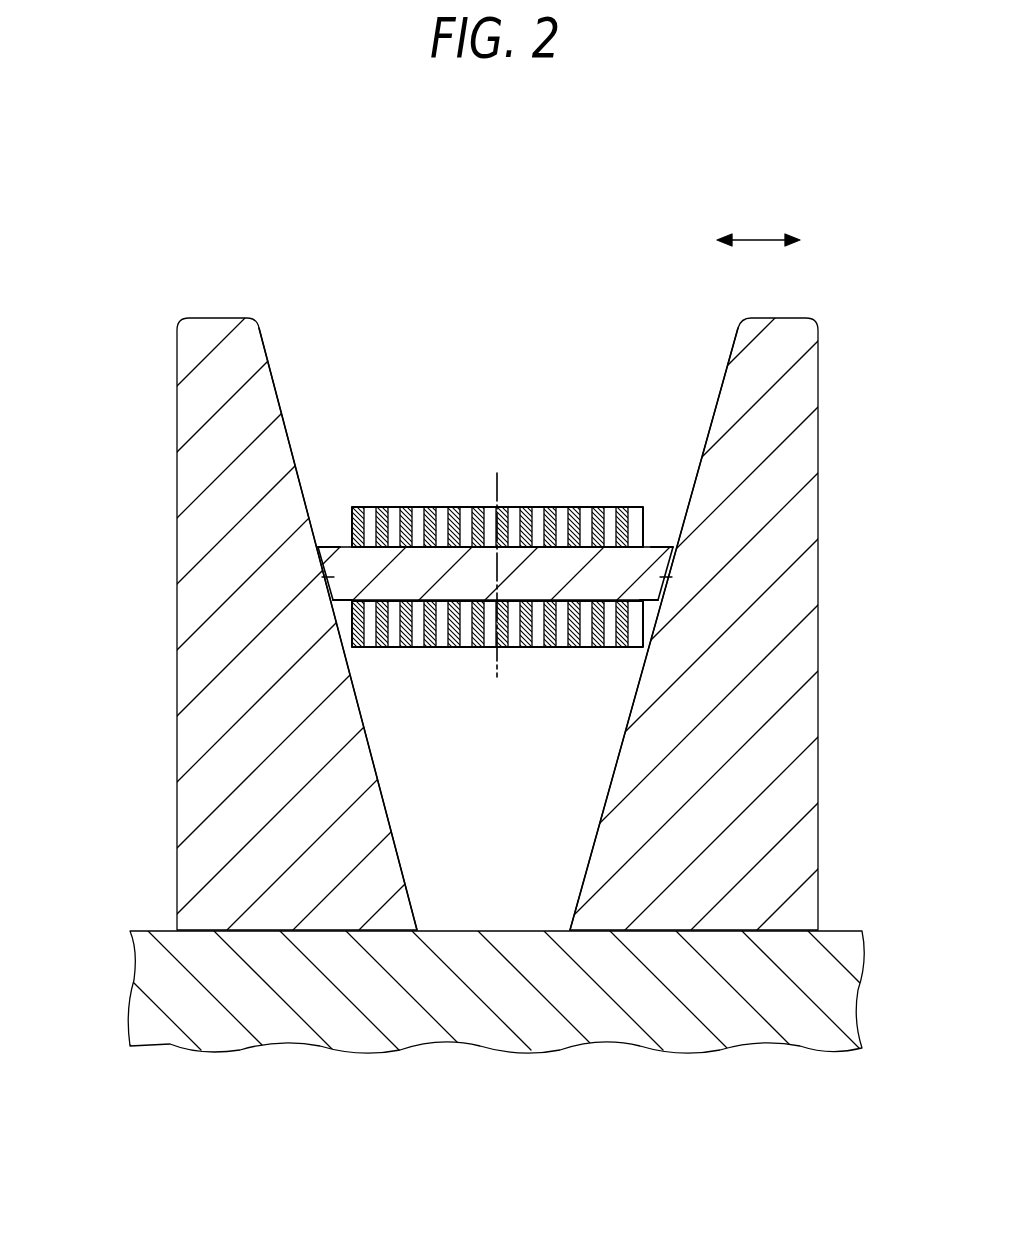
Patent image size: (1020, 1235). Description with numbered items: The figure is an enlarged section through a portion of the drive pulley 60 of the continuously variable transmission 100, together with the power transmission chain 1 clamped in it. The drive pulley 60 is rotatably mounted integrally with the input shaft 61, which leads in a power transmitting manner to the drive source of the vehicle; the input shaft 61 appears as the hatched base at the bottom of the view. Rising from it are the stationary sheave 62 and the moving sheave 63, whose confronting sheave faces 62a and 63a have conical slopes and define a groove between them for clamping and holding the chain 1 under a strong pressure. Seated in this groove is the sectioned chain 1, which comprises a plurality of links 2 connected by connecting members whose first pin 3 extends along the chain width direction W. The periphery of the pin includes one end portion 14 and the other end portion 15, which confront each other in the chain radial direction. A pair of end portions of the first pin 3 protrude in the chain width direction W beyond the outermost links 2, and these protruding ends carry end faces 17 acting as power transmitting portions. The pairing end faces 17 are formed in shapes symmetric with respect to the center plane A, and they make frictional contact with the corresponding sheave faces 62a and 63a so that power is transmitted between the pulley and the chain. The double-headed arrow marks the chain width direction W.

The continuously variable transmission 100 is at (485, 304).
The drive pulley 60 is at (128, 393).
The input shaft 61 is at (672, 1022).
The stationary sheave 62 is at (186, 366).
The sheave face 62a is at (276, 397).
The moving sheave 63 is at (808, 367).
The sheave face 63a is at (719, 396).
The power transmission chain 1 is at (534, 472).
The link 2 is at (365, 505).
The first pin 3 is at (643, 567).
The one end portion 14 is at (337, 547).
The other end portion 15 is at (340, 606).
The end face 17 is at (322, 577).
The center plane A is at (497, 490).
The chain width direction W is at (760, 240).